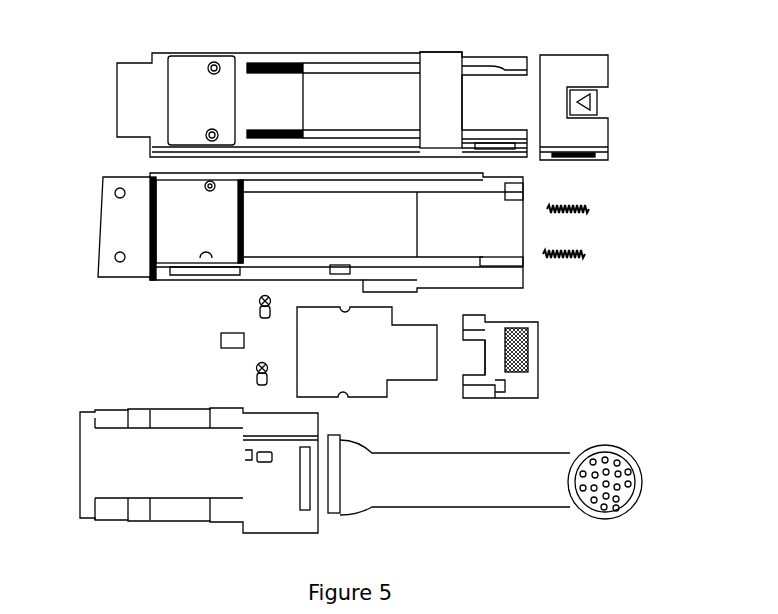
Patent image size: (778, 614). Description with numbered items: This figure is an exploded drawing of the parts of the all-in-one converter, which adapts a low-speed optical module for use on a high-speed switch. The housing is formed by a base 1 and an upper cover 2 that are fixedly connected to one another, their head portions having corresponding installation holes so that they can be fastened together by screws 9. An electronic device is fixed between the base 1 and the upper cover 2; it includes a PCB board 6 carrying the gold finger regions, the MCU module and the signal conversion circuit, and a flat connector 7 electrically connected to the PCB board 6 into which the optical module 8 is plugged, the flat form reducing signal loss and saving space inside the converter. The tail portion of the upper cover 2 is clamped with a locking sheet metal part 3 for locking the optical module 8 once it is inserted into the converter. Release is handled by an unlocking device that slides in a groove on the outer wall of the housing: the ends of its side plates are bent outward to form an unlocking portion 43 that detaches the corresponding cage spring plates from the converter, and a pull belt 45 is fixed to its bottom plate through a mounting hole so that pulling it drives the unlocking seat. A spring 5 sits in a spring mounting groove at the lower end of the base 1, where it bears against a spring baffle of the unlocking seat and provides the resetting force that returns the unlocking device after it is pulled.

The base 1 is at (104, 215).
The upper cover 2 is at (121, 102).
The locking sheet metal part 3 is at (568, 57).
The spring 5 is at (590, 209).
The PCB board 6 is at (383, 386).
The connector 7 is at (540, 357).
The optical module 8 is at (222, 345).
The screw 9 is at (259, 305).
The unlocking portion 43 is at (83, 520).
The pull belt 45 is at (383, 507).